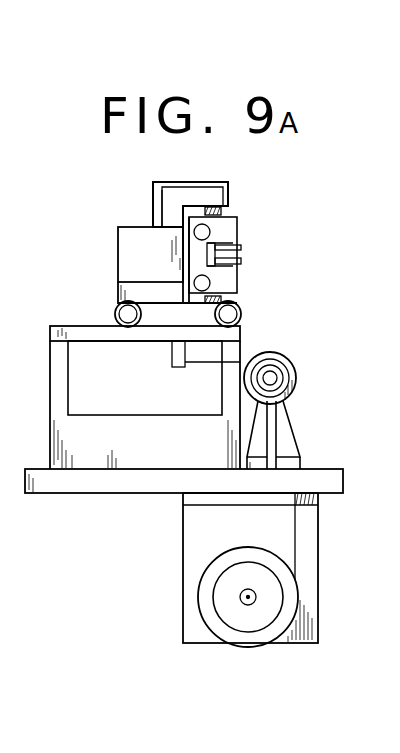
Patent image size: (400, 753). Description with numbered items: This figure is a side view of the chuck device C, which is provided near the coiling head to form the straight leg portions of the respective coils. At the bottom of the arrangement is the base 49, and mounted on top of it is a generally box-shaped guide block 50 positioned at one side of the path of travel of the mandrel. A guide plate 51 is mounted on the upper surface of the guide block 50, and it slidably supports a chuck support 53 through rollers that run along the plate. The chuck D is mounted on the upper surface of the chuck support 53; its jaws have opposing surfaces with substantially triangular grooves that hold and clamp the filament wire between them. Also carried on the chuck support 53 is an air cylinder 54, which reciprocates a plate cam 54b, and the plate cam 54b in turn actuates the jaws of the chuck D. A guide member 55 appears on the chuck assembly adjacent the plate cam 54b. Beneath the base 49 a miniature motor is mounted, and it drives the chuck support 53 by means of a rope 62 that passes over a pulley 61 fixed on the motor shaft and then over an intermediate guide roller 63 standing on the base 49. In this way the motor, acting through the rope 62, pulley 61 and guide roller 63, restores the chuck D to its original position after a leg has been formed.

The base 49 is at (117, 482).
The guide block 50 is at (50, 460).
The guide plate 51 is at (82, 330).
The chuck support 53 is at (157, 222).
The air cylinder 54 is at (117, 275).
The plate cam 54b is at (210, 231).
The guide members 55 is at (222, 210).
The pulley 61 is at (265, 636).
The rope 62 is at (297, 540).
The intermediate guide roller 63 is at (282, 364).
The chuck D is at (208, 181).
The chuck device C is at (241, 183).